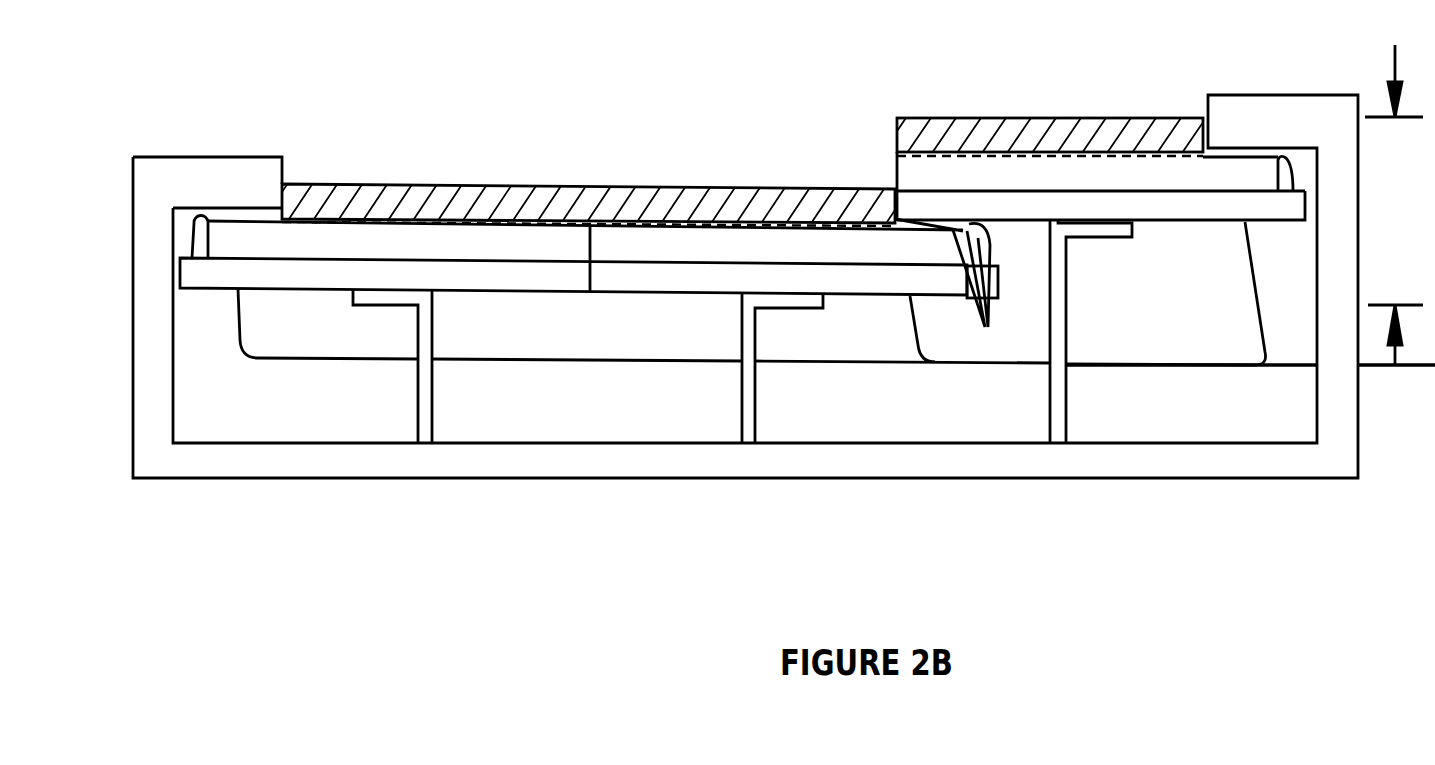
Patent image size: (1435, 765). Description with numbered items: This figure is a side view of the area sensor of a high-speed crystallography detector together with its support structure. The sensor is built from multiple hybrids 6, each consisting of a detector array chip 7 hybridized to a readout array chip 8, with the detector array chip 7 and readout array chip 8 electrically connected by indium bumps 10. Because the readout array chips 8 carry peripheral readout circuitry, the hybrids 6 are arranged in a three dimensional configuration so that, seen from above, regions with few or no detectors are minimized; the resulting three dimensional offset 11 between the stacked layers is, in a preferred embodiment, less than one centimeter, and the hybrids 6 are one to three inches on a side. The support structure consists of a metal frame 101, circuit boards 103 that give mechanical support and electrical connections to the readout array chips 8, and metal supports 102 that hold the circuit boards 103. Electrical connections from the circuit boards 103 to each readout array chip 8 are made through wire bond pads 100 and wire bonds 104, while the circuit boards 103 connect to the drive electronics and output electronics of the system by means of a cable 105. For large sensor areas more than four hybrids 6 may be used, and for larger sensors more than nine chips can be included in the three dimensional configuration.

The hybrid 6 is at (897, 143).
The detector array chip 7 is at (425, 186).
The readout array chip 8 is at (645, 240).
The indium bumps 10 is at (765, 227).
The three dimensional offset 11 is at (1394, 205).
The wire bond pads 100 is at (986, 293).
The metal frame 101 is at (187, 158).
The metal supports 102 is at (437, 392).
The circuit boards 103 is at (477, 280).
The wire bonds 104 is at (190, 230).
The cable 105 is at (342, 365).